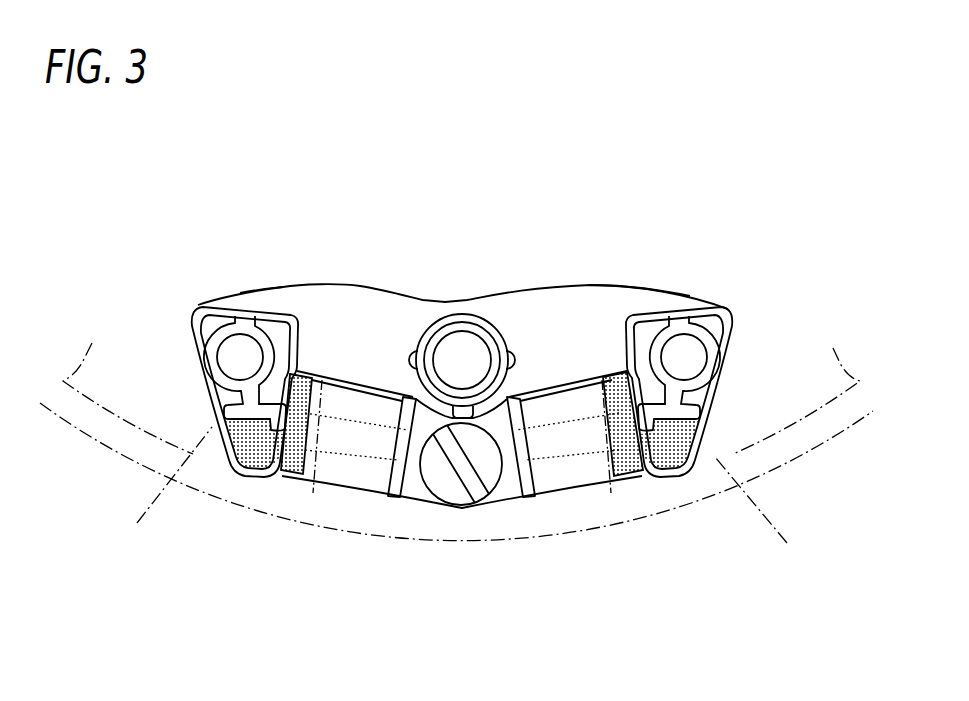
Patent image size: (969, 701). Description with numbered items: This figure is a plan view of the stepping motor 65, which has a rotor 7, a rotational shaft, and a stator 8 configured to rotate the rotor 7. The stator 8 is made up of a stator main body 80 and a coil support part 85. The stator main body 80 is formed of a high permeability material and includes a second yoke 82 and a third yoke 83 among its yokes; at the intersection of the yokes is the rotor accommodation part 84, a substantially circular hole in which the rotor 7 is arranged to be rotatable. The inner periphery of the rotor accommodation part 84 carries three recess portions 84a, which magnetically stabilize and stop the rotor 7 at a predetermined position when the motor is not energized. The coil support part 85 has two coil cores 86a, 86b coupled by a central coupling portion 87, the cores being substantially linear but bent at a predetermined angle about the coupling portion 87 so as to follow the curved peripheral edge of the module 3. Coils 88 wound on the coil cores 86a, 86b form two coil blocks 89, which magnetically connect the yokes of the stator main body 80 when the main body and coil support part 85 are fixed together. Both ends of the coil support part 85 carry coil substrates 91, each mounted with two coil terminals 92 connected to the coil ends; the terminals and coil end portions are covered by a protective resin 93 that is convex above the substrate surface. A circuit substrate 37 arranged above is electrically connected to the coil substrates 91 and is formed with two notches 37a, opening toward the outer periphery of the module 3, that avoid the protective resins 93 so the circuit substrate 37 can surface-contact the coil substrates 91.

The module 3 is at (797, 463).
The rotor 7 is at (462, 405).
The stator 8 is at (213, 268).
The circuit substrate 37 is at (97, 407).
The notch 37a is at (463, 505).
The stepping motor 65 is at (597, 198).
The stator main body 80 is at (310, 255).
The second yoke 82 is at (357, 320).
The third yoke 83 is at (588, 323).
The rotor accommodation part 84 is at (437, 313).
The recess portion 84a is at (404, 353).
The coil support part 85 is at (450, 527).
The coil core 86a is at (362, 457).
The coil core 86b is at (557, 457).
The coupling portion 87 is at (500, 490).
The coil 88 is at (318, 502).
The coil block 89 is at (343, 480).
The coil substrate 91 is at (273, 333).
The coil terminal 92 is at (247, 473).
The protective resin 93 is at (300, 462).